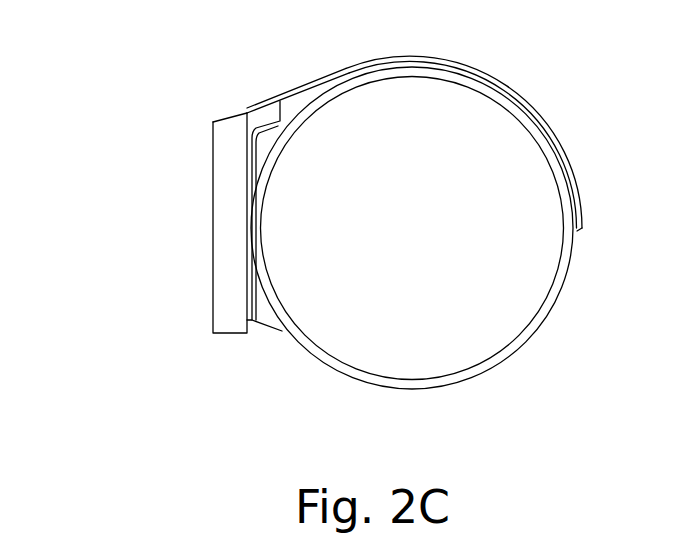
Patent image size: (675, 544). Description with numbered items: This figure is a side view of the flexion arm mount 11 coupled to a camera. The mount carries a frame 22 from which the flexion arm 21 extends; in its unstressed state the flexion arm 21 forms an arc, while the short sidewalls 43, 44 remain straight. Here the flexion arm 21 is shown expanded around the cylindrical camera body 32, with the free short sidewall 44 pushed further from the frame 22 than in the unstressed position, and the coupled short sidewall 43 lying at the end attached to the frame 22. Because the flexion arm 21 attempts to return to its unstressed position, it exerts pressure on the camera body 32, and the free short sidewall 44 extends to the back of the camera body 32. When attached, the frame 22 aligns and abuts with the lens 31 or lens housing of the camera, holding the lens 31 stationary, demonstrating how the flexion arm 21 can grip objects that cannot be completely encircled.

The flexion arm mount 11 is at (277, 92).
The flexion arm 21 is at (352, 63).
The frame 22 is at (233, 258).
The lens 31 is at (257, 152).
The camera body 32 is at (376, 364).
The coupled short sidewall 43 is at (250, 108).
The free short sidewall 44 is at (578, 222).